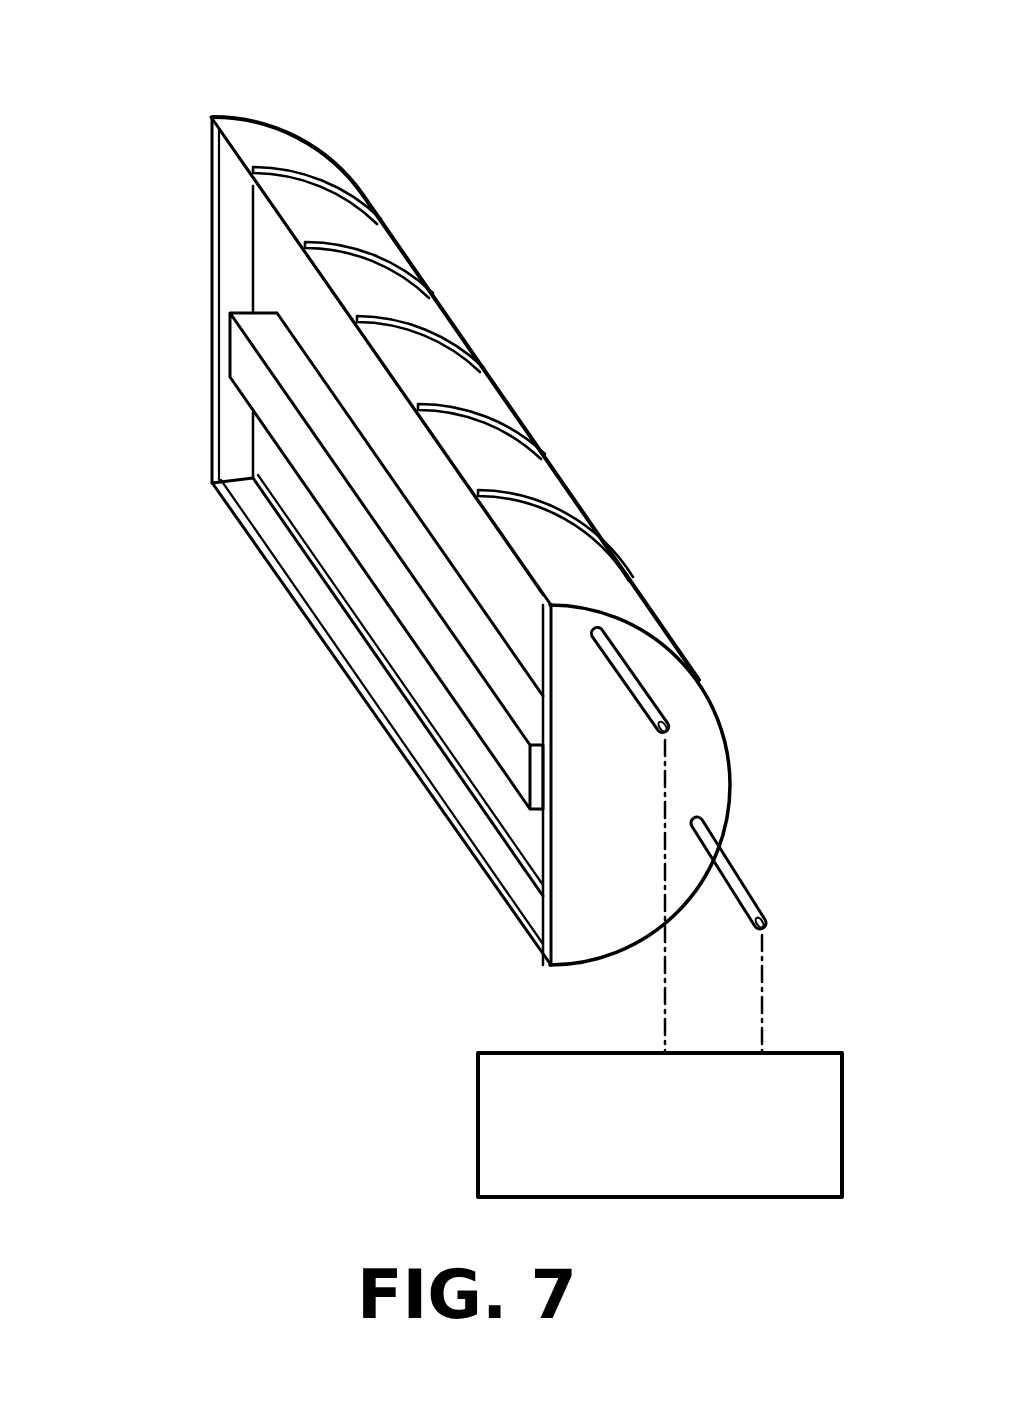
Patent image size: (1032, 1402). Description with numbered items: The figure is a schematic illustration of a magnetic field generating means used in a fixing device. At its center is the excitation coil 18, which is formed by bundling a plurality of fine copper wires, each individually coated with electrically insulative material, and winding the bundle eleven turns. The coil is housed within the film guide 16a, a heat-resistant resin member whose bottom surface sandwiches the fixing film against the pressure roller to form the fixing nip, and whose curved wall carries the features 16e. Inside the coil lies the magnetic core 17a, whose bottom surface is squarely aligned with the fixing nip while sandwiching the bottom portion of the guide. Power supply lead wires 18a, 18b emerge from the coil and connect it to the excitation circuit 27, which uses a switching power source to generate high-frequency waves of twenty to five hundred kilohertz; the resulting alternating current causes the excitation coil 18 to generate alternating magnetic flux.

The film guide 16a is at (258, 137).
The curved fins (slits) of lamp housing 16e is at (493, 367).
The magnetic core 17a is at (243, 360).
The excitation coil 18 is at (470, 742).
The power supply lead wire 18a is at (755, 883).
The power supply lead wire 18b is at (633, 682).
The excitation circuit 27 is at (478, 1118).